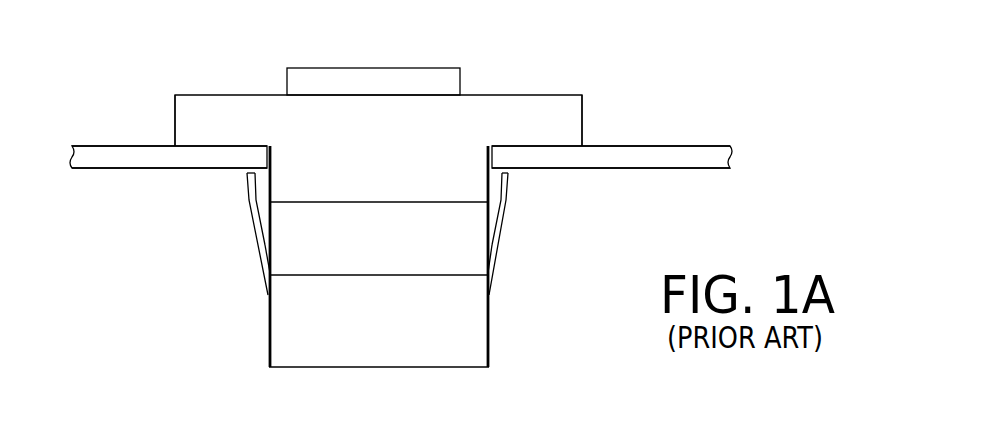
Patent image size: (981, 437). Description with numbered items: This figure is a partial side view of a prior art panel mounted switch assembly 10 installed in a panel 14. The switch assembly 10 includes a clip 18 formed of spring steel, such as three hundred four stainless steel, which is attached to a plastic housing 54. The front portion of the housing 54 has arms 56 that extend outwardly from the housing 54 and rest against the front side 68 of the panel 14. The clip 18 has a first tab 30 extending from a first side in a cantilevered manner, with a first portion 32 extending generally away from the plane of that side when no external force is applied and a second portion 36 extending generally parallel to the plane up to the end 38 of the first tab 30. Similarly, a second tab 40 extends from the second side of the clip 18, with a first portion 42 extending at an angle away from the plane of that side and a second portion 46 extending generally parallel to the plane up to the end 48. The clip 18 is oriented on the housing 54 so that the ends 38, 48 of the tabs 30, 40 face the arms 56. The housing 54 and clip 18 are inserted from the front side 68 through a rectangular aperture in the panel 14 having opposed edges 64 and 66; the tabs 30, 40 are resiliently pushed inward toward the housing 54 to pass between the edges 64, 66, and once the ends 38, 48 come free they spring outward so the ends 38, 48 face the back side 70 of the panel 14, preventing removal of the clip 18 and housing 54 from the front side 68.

The switch assembly 10 is at (484, 78).
The panel 14 is at (128, 152).
The clip 18 is at (375, 277).
The first tab 30 is at (513, 239).
The first portion 32 is at (498, 258).
The second portion 36 is at (503, 190).
The end 38 is at (508, 166).
The second tab 40 is at (245, 227).
The first portion 42 is at (260, 260).
The second portion 46 is at (257, 192).
The end 48 is at (250, 167).
The housing 54 is at (270, 335).
The arms 56 is at (175, 120).
The opposed edge 64 is at (272, 157).
The opposed edge 66 is at (487, 157).
The front side 68 is at (97, 146).
The back side 70 is at (135, 169).